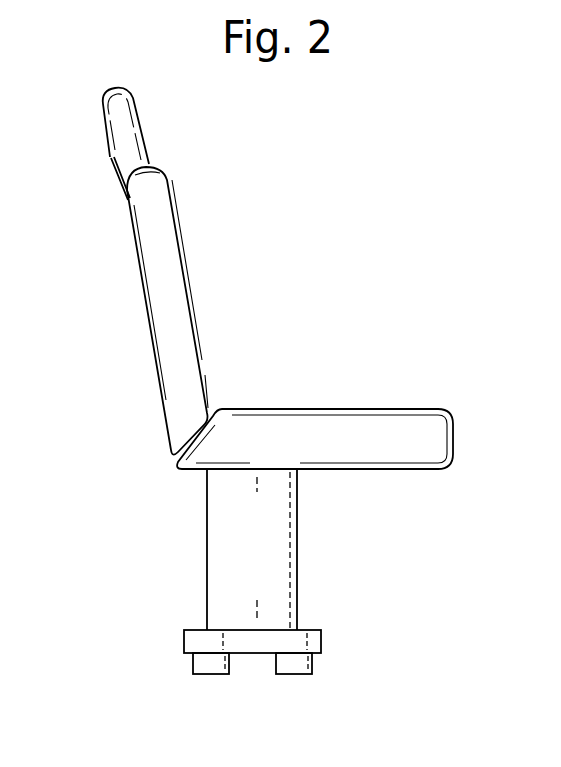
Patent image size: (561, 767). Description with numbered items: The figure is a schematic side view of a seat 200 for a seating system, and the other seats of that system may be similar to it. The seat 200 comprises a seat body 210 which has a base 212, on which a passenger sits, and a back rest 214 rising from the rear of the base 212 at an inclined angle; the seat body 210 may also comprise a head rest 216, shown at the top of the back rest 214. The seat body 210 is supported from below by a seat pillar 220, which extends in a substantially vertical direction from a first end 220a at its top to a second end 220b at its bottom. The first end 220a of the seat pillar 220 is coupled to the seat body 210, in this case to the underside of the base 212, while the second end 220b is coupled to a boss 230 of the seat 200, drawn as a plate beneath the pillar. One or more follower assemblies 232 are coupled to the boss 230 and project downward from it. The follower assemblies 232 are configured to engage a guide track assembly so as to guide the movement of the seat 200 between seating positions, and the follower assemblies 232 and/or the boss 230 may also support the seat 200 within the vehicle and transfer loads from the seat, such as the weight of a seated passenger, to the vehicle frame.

The seat 200 is at (336, 247).
The seat body 210 is at (182, 313).
The base 212 is at (380, 423).
The back rest 214 is at (165, 232).
The head rest 216 is at (132, 118).
The seat pillar 220 is at (274, 562).
The first end of the seat pillar 220a is at (300, 471).
The second end of the seat pillar 220b is at (207, 630).
The boss 230 is at (295, 641).
The follower assemblies 232 is at (207, 667).